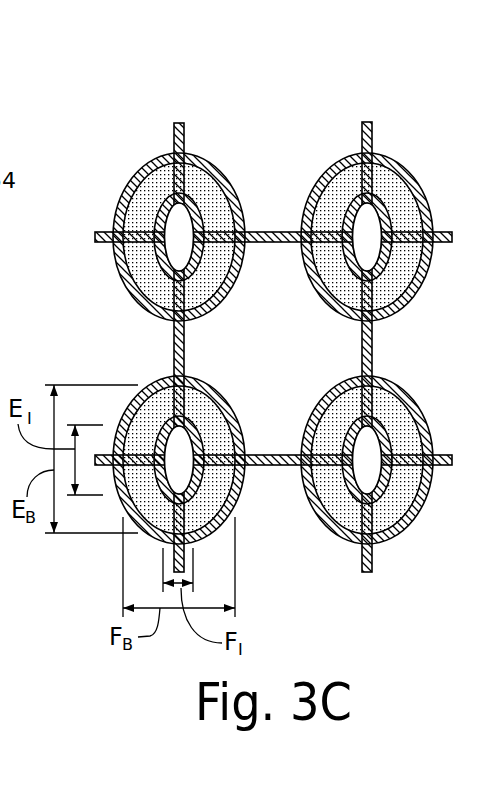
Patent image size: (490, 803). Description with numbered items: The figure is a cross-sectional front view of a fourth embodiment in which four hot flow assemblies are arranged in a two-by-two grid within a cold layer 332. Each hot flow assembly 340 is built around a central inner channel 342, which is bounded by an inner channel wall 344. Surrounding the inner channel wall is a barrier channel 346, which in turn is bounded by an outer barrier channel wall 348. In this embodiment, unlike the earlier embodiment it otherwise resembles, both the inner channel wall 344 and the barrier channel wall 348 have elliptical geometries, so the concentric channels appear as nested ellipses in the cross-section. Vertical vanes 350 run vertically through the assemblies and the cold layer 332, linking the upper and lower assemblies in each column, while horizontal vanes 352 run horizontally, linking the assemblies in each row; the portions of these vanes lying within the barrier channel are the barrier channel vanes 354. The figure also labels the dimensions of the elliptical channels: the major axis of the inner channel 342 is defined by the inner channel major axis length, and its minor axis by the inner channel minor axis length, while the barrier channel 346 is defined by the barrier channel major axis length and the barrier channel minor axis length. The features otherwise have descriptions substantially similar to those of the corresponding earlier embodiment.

The cold layer 332 is at (290, 352).
The hot flow assembly 340 is at (411, 147).
The inner channel 342 is at (177, 222).
The inner channel wall 344 is at (162, 217).
The barrier channel 346 is at (196, 172).
The barrier channel wall 348 is at (222, 180).
The vertical vanes 350 is at (173, 348).
The horizontal vanes 352 is at (272, 467).
The barrier channel vanes 354 is at (412, 228).